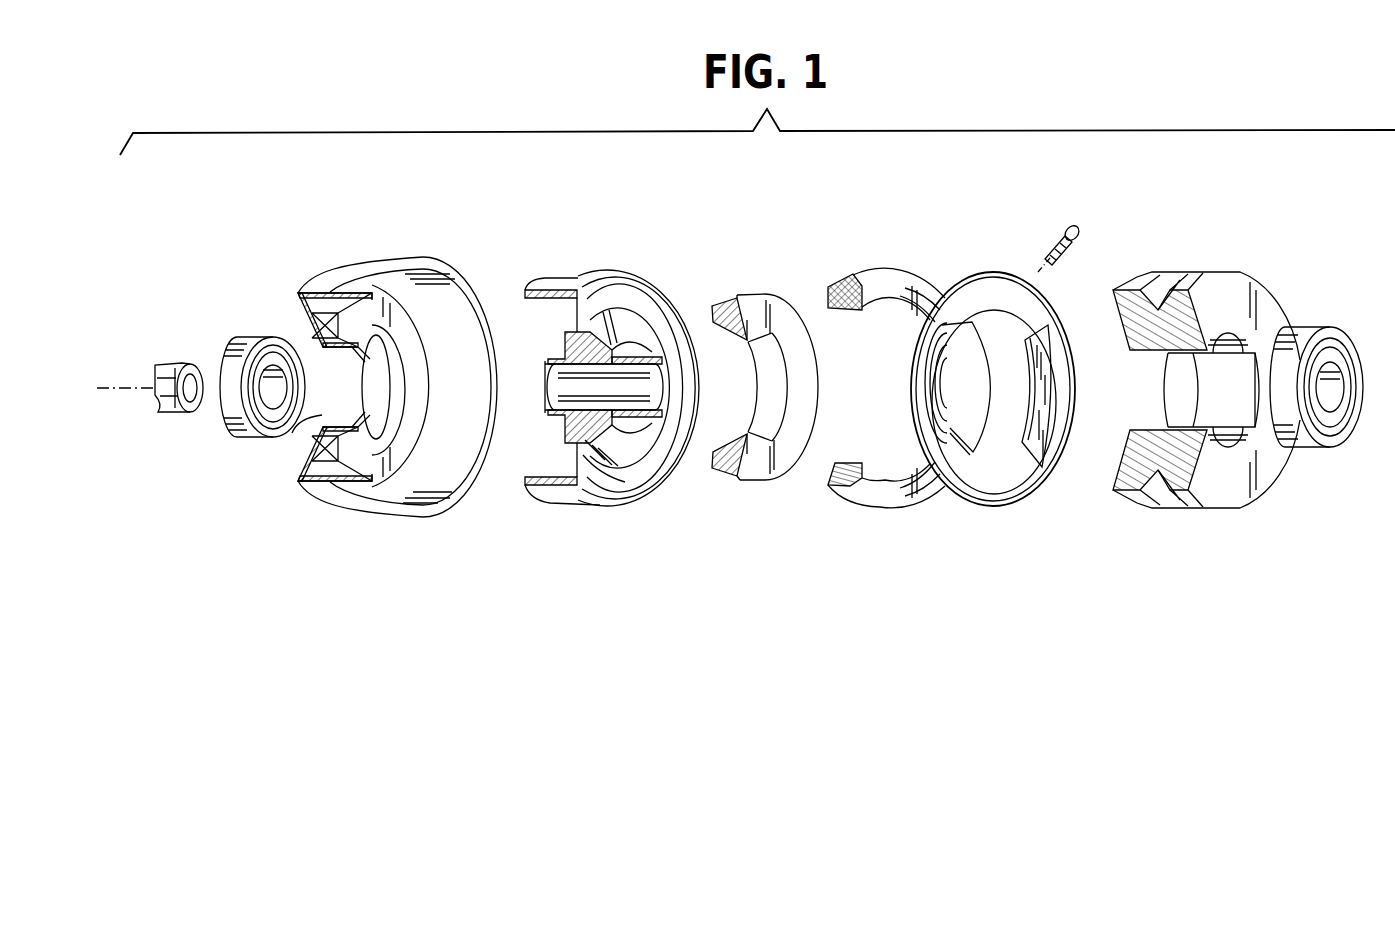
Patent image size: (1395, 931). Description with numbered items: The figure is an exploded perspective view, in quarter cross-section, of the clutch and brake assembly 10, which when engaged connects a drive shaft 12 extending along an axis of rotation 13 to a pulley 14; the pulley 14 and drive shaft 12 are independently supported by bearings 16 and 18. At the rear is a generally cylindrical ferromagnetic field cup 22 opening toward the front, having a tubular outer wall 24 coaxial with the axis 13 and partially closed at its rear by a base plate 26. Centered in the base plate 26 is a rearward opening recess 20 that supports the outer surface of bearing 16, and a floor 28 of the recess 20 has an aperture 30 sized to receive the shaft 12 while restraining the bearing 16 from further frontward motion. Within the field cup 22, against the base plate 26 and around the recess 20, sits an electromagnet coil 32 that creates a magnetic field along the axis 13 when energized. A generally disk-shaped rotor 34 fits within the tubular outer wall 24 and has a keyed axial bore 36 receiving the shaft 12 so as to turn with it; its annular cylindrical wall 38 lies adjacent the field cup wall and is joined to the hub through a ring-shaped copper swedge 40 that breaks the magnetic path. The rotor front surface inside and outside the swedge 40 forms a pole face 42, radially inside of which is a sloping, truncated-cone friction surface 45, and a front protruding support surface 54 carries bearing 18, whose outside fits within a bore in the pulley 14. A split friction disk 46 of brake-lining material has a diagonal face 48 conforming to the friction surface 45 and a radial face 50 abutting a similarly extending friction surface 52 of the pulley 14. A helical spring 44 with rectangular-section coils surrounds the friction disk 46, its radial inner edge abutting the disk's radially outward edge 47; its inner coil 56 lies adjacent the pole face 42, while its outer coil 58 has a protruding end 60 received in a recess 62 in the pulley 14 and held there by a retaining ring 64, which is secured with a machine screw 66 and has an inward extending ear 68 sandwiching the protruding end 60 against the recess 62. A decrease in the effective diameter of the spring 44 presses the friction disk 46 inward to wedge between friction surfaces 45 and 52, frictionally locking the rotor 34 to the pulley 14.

The clutch and brake assembly 10 is at (923, 206).
The drive shaft 12 is at (169, 367).
The axis of rotation 13 is at (133, 385).
The pulley 14 is at (1203, 410).
The bearing 16 is at (253, 438).
The bearing 18 is at (1318, 450).
The rearward opening recess 20 is at (305, 436).
The field cup 22 is at (372, 360).
The tubular outer wall 24 is at (386, 258).
The base plate 26 is at (310, 333).
The floor 28 is at (362, 358).
The aperture 30 is at (384, 372).
The electromagnet coil 32 is at (423, 378).
The rotor 34 is at (618, 373).
The keyed axial bore 36 is at (660, 388).
The annular cylindrical wall 38 is at (548, 279).
The copper swedge 40 is at (632, 288).
The pole face 42 is at (628, 492).
The helical spring 44 is at (873, 397).
The friction surface 45 is at (634, 326).
The friction disk 46 is at (794, 380).
The radially outward edge 47 is at (733, 296).
The diagonal face 48 is at (784, 374).
The radial face 50 is at (808, 416).
The friction surface 52 is at (1011, 381).
The support surface 54 is at (665, 360).
The inner coil 56 is at (846, 280).
The outer coil 58 is at (917, 276).
The protruding end 60 is at (975, 400).
The recess 62 is at (1165, 376).
The retaining ring 64 is at (1050, 302).
The machine screw 66 is at (1086, 226).
The ear 68 is at (1028, 340).